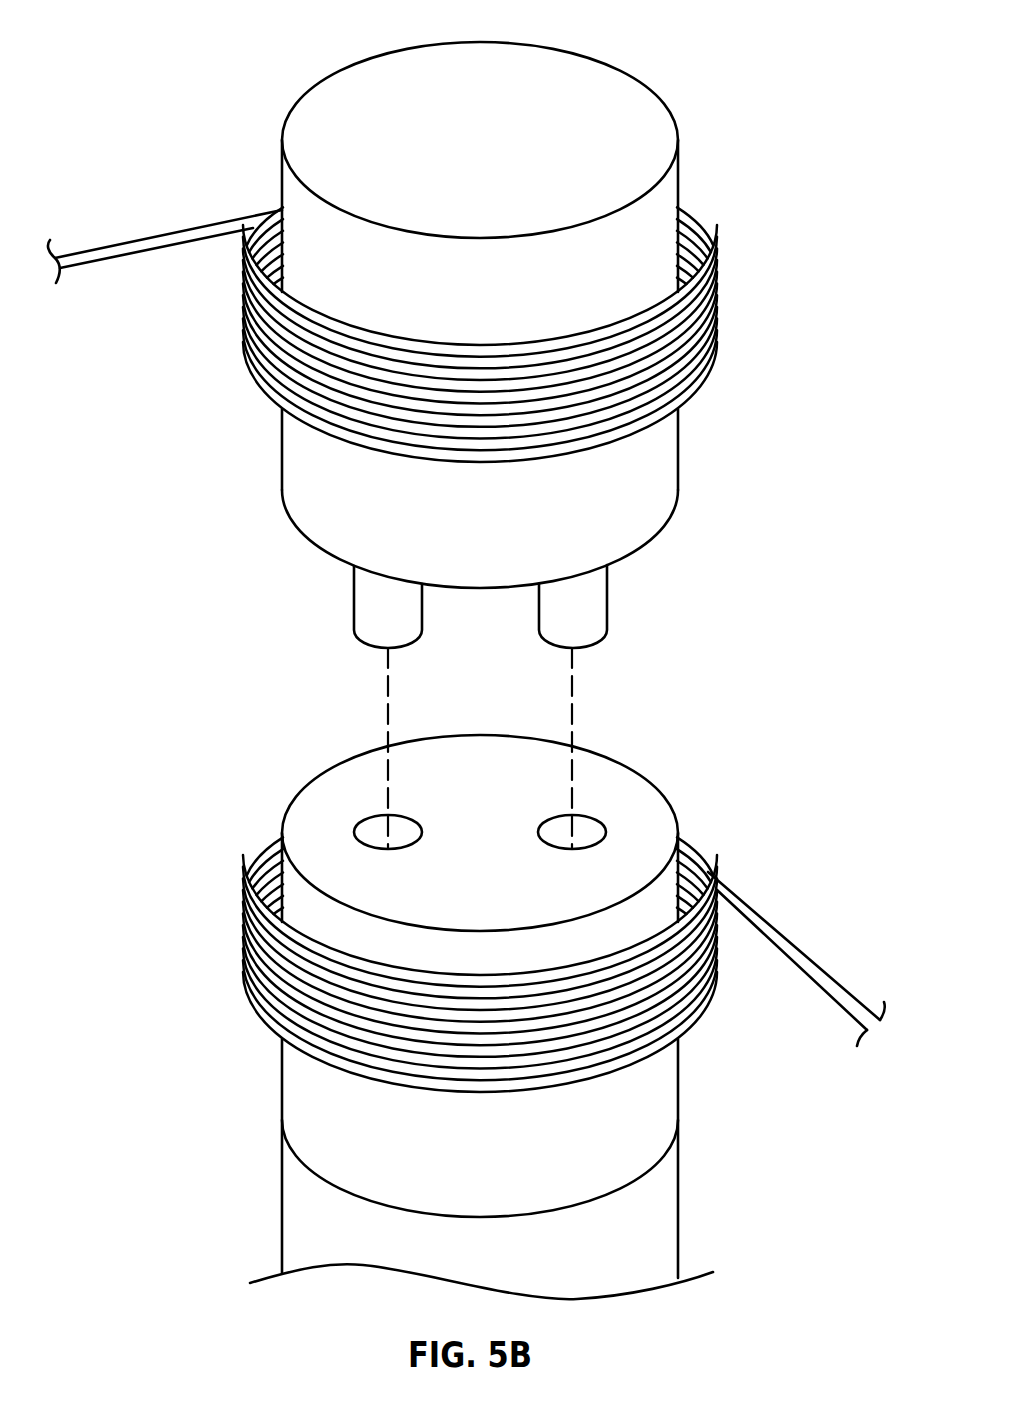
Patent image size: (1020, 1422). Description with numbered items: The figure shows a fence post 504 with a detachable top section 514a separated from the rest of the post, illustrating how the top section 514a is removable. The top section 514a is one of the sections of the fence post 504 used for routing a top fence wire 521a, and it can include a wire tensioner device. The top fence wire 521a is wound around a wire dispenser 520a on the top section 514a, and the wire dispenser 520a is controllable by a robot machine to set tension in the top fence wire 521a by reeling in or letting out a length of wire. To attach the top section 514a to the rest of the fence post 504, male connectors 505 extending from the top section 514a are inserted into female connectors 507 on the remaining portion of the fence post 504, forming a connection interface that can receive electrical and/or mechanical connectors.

The fence post 504 is at (283, 62).
The male connectors 505 is at (354, 602).
The female connectors 507 is at (363, 818).
The top section 514a is at (718, 137).
The wire dispenser 520a is at (245, 330).
The top fence wire 521a is at (163, 232).